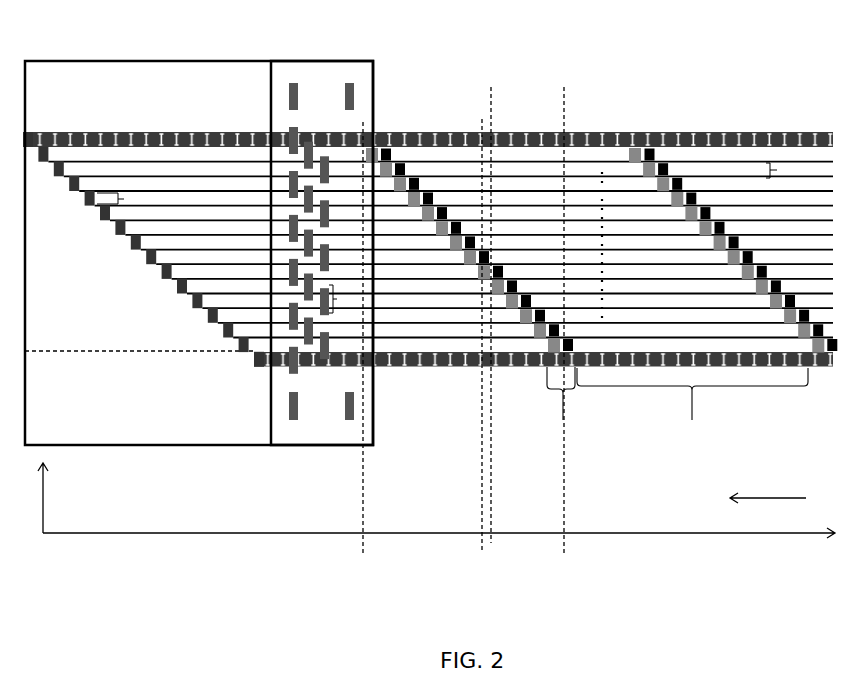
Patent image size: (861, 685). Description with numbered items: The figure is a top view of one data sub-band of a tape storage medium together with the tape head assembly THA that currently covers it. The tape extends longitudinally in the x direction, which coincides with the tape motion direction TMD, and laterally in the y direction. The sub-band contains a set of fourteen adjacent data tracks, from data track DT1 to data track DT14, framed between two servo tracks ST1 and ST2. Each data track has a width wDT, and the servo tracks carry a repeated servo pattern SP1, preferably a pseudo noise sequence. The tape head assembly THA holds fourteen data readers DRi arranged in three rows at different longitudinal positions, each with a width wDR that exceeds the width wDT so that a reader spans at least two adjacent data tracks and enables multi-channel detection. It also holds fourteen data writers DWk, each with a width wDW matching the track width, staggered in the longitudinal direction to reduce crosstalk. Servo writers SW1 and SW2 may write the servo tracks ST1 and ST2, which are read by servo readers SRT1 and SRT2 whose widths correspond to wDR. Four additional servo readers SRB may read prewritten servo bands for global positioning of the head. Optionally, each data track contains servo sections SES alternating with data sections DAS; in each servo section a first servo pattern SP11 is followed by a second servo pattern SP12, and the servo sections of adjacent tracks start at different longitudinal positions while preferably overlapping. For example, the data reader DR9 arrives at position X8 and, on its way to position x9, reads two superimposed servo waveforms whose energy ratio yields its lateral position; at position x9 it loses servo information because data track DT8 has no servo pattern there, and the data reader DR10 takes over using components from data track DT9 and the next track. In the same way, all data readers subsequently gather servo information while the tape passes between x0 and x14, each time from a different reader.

The servo writer SW1 is at (28, 132).
The servo track ST1 is at (197, 133).
The servo reader SRT1 is at (293, 130).
The additional servo readers SRB is at (348, 83).
The tape head assembly THA is at (375, 95).
The data readers DRi is at (297, 225).
The servo pattern SP1 is at (588, 133).
The first servo pattern SP11 is at (635, 160).
The second servo pattern SP12 is at (658, 160).
The data track DT1 is at (487, 155).
The data track DT8 is at (497, 258).
The data track DT9 is at (509, 272).
The data track DT14 is at (583, 345).
The width of data track wDT is at (790, 171).
The width of data writer wDW is at (131, 199).
The width of data reader wDR is at (345, 299).
The data reader DR9 is at (288, 272).
The data reader DR10 is at (300, 292).
The data writers DWk is at (226, 338).
The servo writer SW2 is at (255, 367).
The servo reader SRT2 is at (288, 372).
The servo track ST2 is at (477, 365).
The servo sections SES is at (566, 410).
The data sections DAS is at (692, 410).
The tape motion direction TMD is at (768, 486).
The longitudinal position x0 is at (364, 350).
The longitudinal position X8 is at (483, 348).
The longitudinal position x9 is at (505, 315).
The longitudinal position x14 is at (571, 332).
The longitudinal direction x is at (439, 549).
The lateral direction y is at (52, 498).